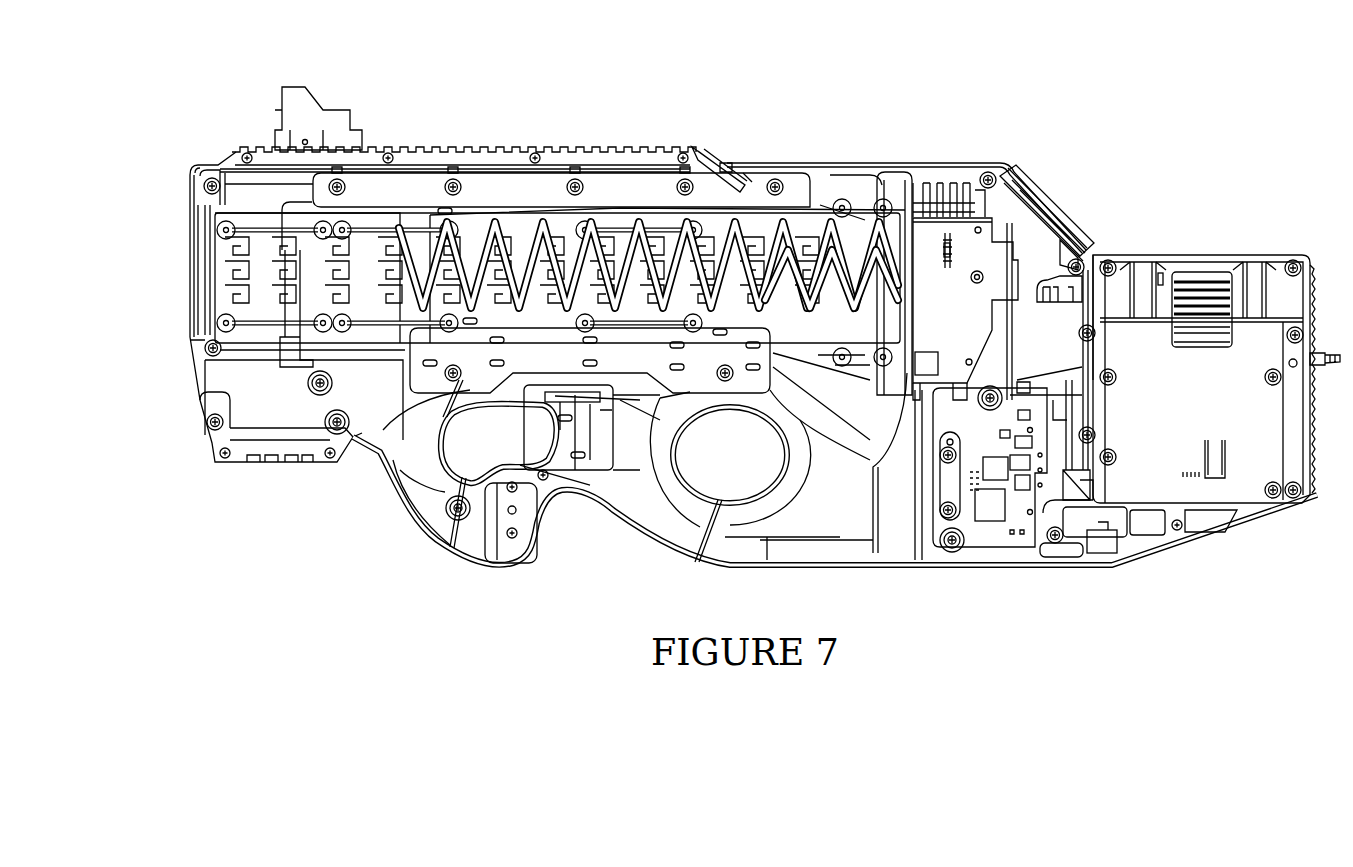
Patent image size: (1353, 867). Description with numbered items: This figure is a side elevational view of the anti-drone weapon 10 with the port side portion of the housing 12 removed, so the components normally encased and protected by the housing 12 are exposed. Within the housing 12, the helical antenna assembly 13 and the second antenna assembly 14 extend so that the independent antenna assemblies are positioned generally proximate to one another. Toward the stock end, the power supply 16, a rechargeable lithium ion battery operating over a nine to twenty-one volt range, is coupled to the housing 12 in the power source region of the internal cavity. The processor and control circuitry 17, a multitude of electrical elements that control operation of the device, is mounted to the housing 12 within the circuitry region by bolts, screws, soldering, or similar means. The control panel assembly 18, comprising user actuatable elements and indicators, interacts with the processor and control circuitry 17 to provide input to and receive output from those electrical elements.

The anti-drone weapon 10 is at (765, 326).
The housing 12 is at (938, 156).
The helical antenna assembly 13 is at (716, 236).
The second antenna assembly 14 is at (236, 203).
The power supply 16 is at (1285, 247).
The processor and control circuitry 17 is at (973, 545).
The control panel assembly 18 is at (1078, 191).